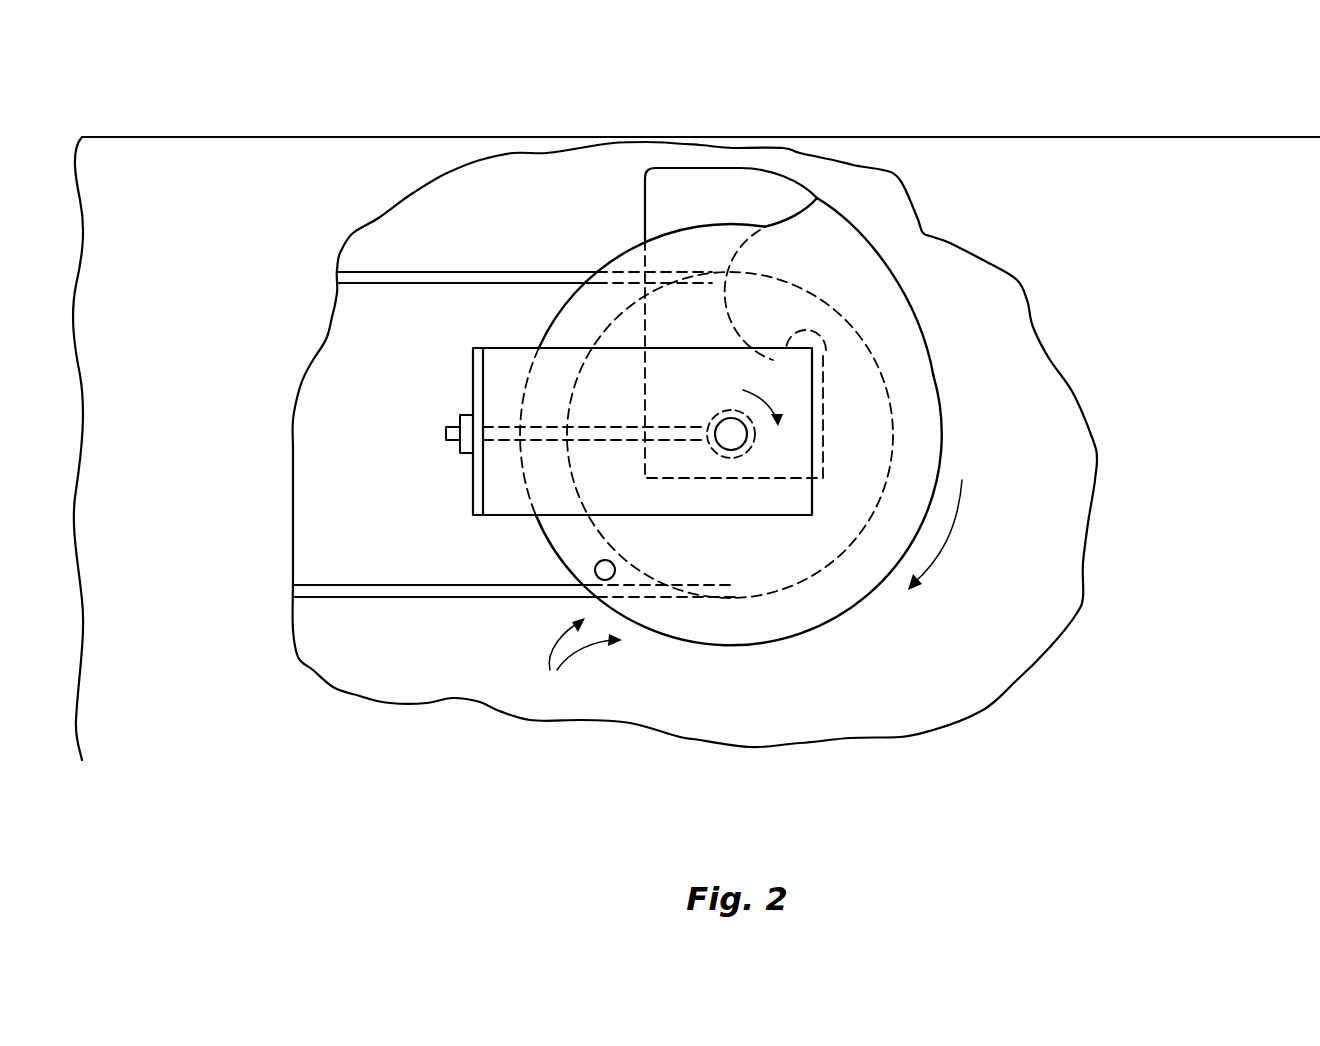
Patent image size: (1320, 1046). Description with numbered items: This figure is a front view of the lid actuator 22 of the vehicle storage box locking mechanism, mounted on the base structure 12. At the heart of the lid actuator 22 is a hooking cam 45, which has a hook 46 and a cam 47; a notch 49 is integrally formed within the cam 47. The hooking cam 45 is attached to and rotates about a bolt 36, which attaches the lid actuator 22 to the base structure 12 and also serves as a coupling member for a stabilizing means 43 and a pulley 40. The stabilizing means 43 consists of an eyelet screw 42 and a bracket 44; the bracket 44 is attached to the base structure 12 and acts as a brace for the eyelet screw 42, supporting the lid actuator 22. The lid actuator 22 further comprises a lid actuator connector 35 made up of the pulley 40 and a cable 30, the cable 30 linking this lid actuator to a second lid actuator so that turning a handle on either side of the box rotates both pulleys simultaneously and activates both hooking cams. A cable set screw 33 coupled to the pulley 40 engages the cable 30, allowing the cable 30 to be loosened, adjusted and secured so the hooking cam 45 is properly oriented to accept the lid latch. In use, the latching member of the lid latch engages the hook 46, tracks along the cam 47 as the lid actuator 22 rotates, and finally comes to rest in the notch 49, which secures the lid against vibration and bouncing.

The base structure 12 is at (1213, 201).
The lid actuator 22 is at (609, 112).
The cable 30 is at (398, 592).
The cable set screw 33 is at (600, 562).
The lid actuator connector 35 is at (581, 660).
The bolt 36 is at (734, 445).
The pulley 40 is at (943, 440).
The eyelet screw 42 is at (446, 432).
The stabilizing means 43 is at (431, 402).
The bracket 44 is at (500, 370).
The hooking cam 45 is at (687, 187).
The hook 46 is at (790, 193).
The cam 47 is at (727, 323).
The notch 49 is at (753, 348).